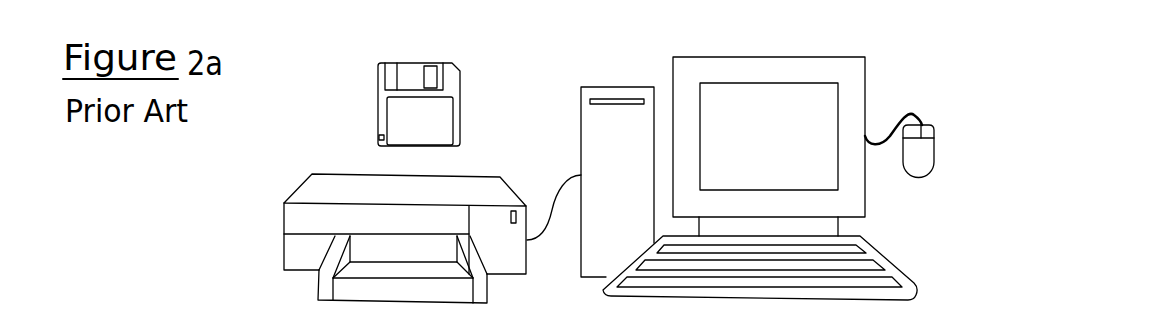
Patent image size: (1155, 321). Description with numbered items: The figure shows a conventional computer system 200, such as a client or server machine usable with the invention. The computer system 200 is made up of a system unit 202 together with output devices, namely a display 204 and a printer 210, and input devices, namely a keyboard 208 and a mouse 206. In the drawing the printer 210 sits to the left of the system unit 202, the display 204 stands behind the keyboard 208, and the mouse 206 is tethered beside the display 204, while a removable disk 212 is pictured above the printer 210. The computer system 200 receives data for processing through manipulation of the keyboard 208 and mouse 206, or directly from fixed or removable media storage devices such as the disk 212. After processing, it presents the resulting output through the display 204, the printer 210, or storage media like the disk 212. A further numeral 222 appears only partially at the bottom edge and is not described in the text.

The computer system 200 is at (1011, 130).
The system unit 202 is at (587, 157).
The display 204 is at (823, 146).
The mouse 206 is at (964, 156).
The keyboard 208 is at (811, 268).
The printer 210 is at (352, 234).
The disk 212 is at (376, 104).
The printer cable 222 is at (566, 248).